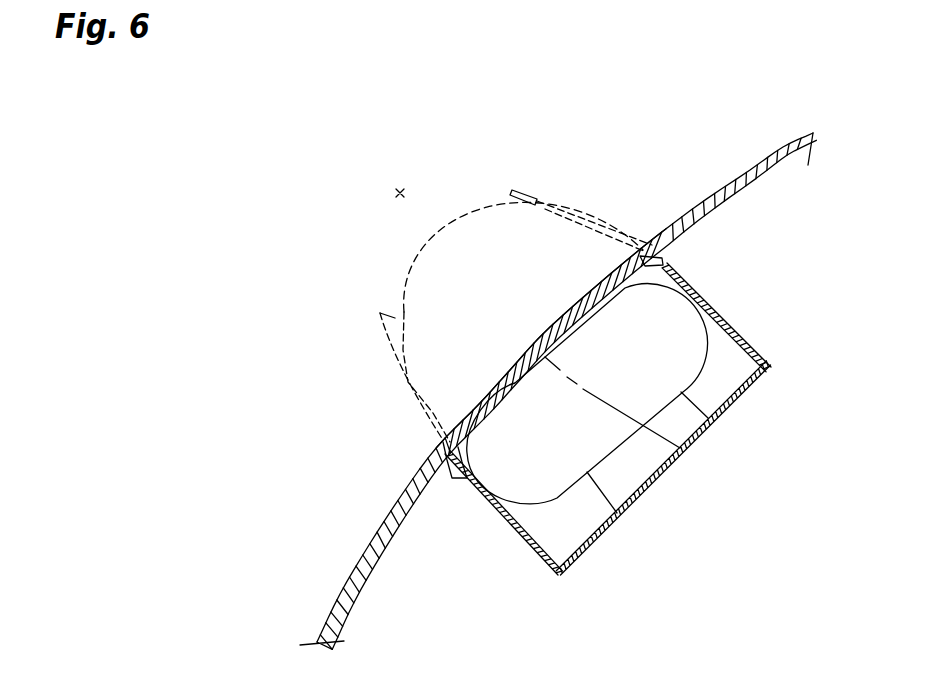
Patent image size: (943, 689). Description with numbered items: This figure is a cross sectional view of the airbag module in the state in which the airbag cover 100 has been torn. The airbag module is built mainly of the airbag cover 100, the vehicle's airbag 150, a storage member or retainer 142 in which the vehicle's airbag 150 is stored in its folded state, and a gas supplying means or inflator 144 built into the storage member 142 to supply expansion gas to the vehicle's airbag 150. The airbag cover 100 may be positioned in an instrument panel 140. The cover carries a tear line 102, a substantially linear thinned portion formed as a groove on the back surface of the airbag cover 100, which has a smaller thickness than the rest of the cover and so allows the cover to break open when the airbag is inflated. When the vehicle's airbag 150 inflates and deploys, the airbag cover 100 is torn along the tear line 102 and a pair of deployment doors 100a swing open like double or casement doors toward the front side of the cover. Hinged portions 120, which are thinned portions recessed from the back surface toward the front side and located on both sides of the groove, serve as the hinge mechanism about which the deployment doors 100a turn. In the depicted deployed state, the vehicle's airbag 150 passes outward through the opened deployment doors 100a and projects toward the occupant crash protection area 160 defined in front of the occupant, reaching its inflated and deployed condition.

The airbag cover 100 is at (693, 200).
The deployment doors 100a is at (598, 297).
The tear line 102 is at (687, 452).
The hinged portions 120 is at (665, 262).
The instrument panel 140 is at (790, 150).
The storage member (retainer) 142 is at (755, 334).
The gas supplying means (inflator) 144 is at (635, 470).
The vehicle's airbag 150 is at (405, 298).
The occupant crash protection area 160 is at (398, 188).